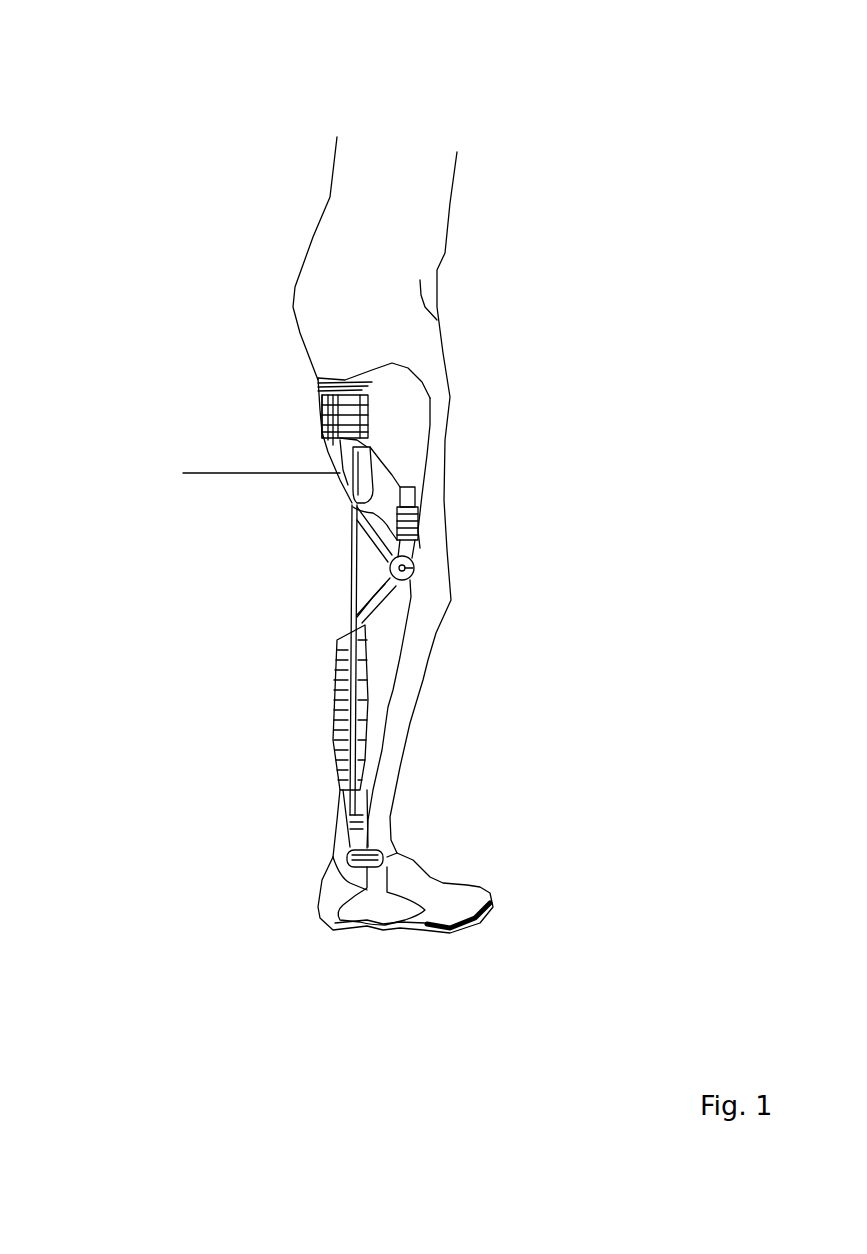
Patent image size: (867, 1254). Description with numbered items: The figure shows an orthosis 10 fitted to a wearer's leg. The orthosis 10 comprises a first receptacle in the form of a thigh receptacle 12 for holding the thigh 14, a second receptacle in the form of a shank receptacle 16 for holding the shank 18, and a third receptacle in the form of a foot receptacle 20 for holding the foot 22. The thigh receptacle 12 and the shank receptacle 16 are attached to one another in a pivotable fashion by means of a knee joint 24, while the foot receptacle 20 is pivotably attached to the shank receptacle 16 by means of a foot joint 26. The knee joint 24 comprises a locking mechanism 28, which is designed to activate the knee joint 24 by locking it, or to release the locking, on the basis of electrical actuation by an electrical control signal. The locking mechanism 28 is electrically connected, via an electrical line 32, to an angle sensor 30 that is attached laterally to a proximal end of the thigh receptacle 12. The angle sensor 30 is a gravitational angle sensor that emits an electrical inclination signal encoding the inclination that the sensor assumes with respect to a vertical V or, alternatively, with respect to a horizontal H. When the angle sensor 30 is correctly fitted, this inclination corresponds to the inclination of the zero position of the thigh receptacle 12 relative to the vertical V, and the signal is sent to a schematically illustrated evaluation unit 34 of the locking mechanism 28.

The orthosis 10 is at (548, 107).
The thigh receptacle 12 is at (430, 393).
The thigh 14 is at (423, 353).
The shank receptacle 16 is at (385, 683).
The shank 18 is at (397, 722).
The foot receptacle 20 is at (352, 943).
The foot 22 is at (440, 902).
The knee joint 24 is at (410, 568).
The foot joint 26 is at (377, 850).
The locking mechanism 28 is at (420, 517).
The angle sensor 30 is at (320, 413).
The electrical line 32 is at (383, 463).
The evaluation unit 34 is at (415, 493).
The horizontal H is at (237, 477).
The vertical V is at (368, 573).